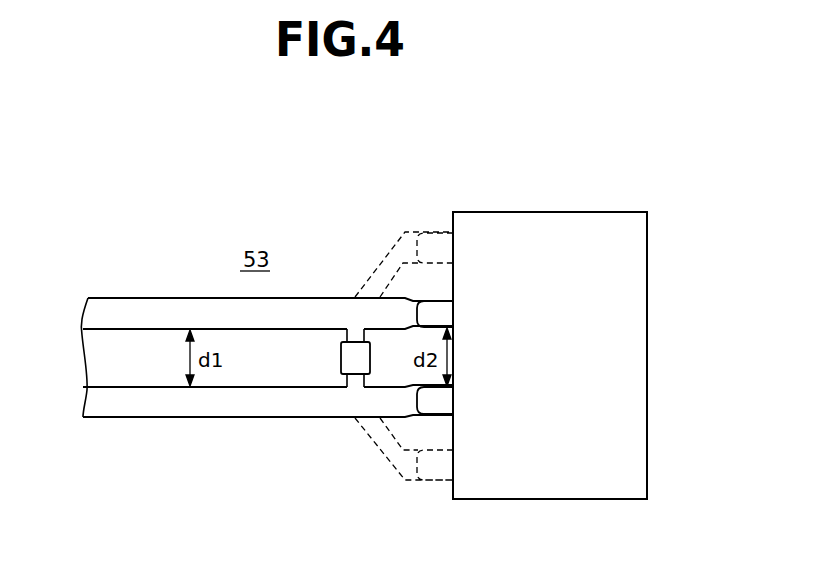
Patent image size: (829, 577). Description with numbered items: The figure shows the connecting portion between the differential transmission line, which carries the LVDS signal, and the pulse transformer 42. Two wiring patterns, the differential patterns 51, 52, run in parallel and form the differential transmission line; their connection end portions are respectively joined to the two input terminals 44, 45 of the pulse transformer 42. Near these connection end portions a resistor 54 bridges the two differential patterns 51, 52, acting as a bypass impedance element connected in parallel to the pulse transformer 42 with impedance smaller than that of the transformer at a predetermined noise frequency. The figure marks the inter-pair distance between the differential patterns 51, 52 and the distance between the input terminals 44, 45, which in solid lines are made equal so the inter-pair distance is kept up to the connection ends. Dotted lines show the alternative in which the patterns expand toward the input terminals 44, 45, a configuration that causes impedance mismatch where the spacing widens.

The pulse transformer 42 is at (543, 226).
The input terminal 44 is at (440, 250).
The input terminal 45 is at (440, 403).
The differential pattern 51 is at (145, 316).
The differential pattern 52 is at (237, 400).
The resistor 54 is at (340, 358).